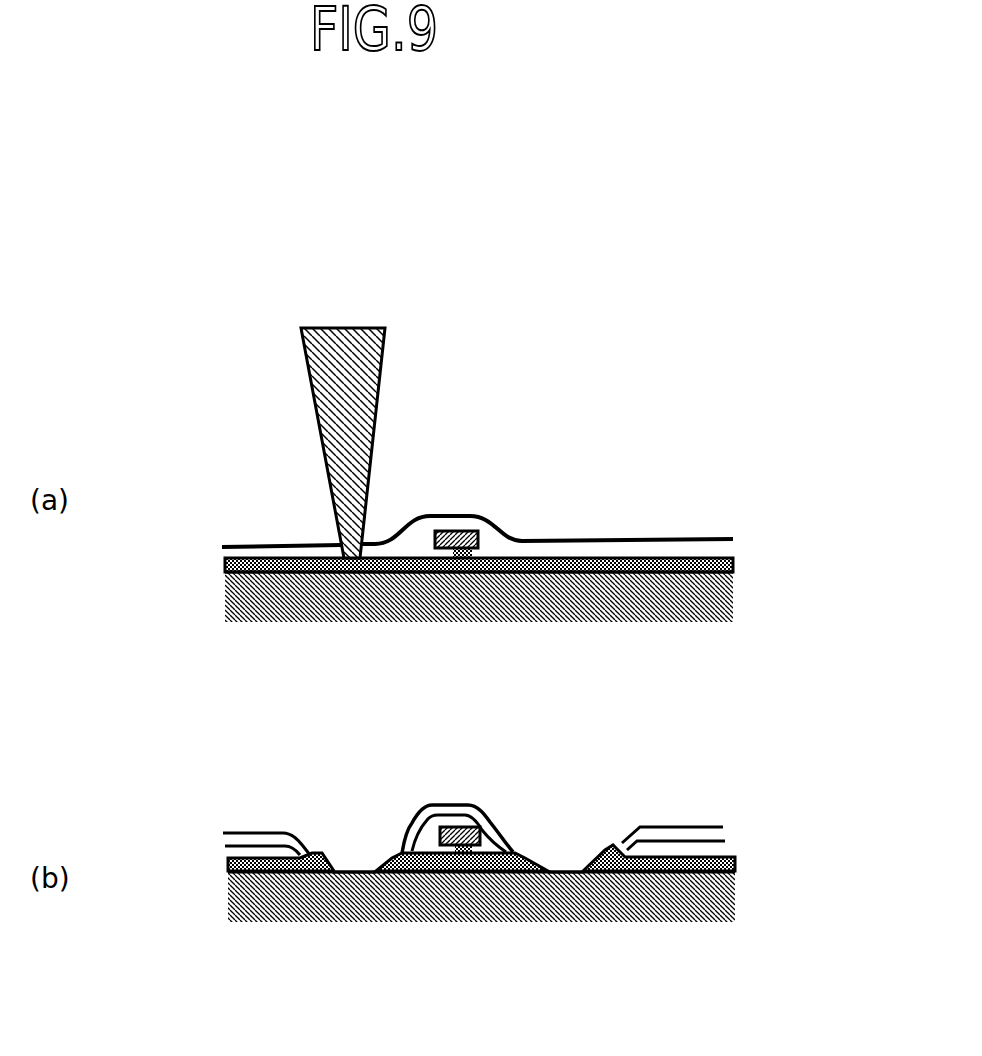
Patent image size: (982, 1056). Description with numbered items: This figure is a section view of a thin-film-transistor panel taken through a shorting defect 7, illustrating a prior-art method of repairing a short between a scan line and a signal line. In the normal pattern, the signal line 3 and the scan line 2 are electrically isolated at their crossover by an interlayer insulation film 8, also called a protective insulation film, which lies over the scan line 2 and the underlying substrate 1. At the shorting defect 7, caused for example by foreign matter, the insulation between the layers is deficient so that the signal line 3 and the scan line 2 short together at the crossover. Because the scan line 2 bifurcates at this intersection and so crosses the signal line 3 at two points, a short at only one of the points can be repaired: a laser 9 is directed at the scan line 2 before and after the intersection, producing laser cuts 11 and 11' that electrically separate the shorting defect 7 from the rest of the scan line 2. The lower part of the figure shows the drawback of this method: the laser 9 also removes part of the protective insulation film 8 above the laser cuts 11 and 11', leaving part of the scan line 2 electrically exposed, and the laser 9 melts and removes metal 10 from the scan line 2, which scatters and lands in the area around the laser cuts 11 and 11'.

The substrate 1 is at (718, 590).
The scan line 2 is at (628, 573).
The signal line 3 is at (465, 530).
The shorting defect 7 is at (518, 573).
The interlayer insulation film 8 is at (672, 545).
The laser 9 is at (327, 410).
The metal 10 is at (248, 833).
The laser cut 11 is at (331, 945).
The laser cut 11' is at (544, 945).